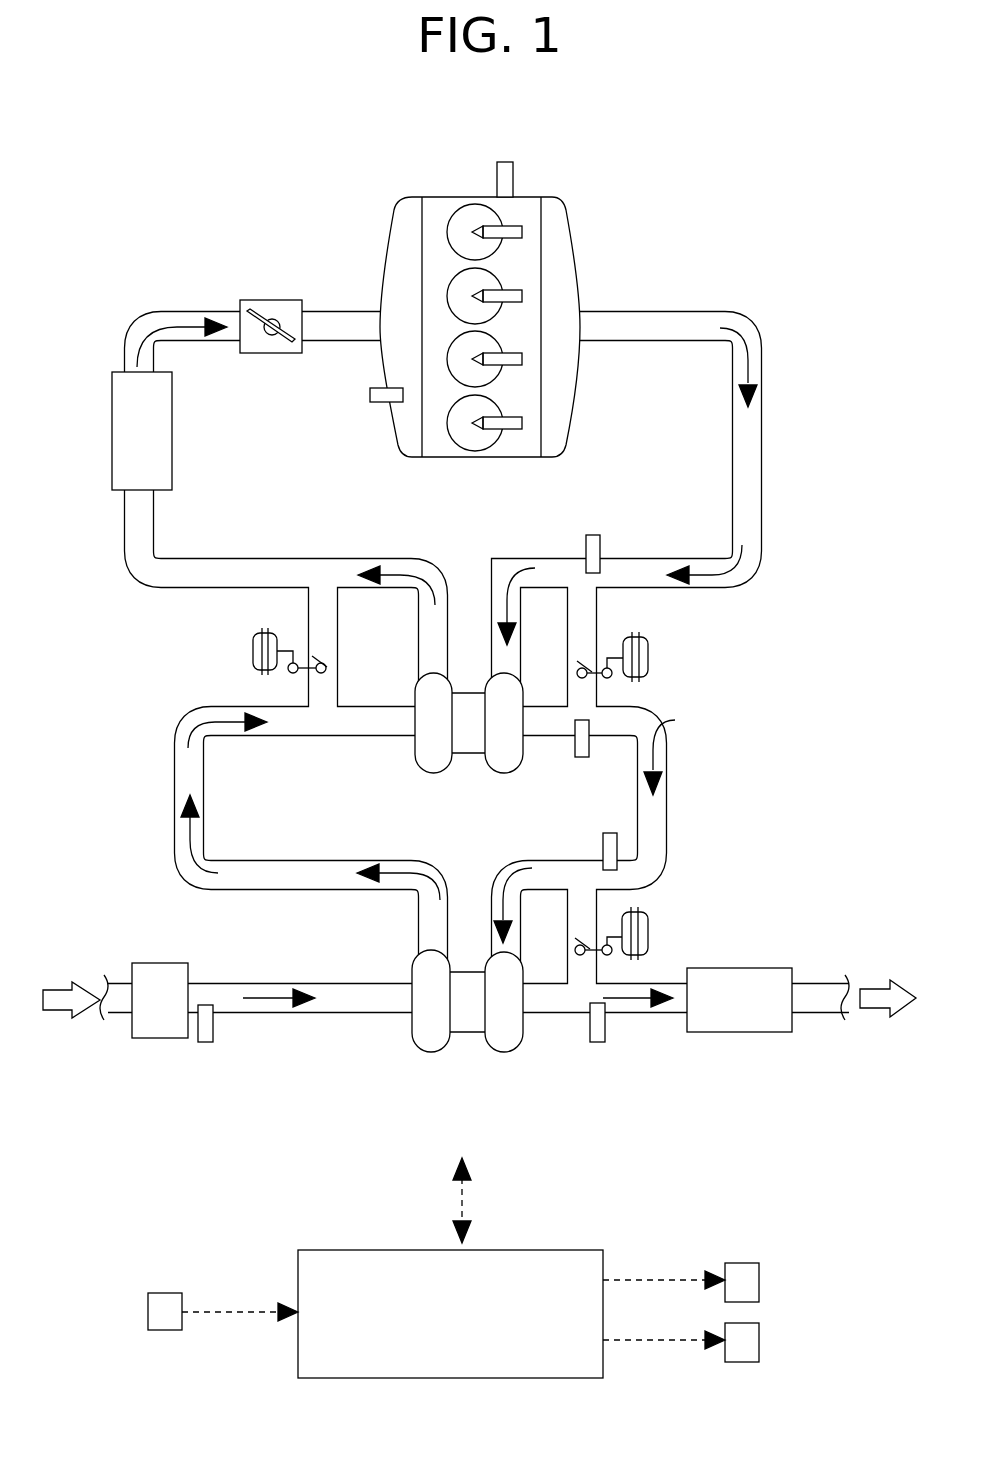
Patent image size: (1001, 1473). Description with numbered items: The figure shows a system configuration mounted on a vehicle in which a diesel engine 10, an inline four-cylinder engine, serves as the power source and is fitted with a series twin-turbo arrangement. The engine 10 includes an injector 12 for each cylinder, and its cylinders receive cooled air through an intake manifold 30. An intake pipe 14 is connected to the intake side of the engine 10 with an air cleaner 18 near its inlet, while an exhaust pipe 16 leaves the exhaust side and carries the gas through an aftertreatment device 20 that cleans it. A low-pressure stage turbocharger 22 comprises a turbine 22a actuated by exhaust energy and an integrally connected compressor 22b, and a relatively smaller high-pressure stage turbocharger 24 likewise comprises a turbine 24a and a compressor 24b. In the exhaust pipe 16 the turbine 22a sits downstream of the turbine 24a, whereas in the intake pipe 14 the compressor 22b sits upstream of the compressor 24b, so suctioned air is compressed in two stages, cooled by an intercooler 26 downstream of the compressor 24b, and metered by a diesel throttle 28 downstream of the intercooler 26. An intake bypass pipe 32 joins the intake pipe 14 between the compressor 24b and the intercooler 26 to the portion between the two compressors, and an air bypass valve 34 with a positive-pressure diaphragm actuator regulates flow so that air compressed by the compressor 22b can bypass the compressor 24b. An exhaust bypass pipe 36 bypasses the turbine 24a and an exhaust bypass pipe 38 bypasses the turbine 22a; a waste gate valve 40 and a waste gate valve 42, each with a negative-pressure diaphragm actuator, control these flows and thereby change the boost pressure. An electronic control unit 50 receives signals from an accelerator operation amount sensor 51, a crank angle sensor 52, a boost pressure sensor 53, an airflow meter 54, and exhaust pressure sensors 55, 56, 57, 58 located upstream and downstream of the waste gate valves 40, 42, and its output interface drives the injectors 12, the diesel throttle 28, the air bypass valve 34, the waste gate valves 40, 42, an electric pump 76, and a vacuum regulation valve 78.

The diesel engine 10 is at (708, 262).
The injector 12 is at (522, 238).
The intake pipe 14 is at (258, 557).
The exhaust pipe 16 is at (645, 558).
The air cleaner 18 is at (150, 963).
The aftertreatment device 20 is at (757, 968).
The low-pressure stage turbocharger 22 is at (470, 1050).
The turbine 22a is at (513, 1030).
The compressor 22b is at (434, 1040).
The high-pressure stage turbocharger 24 is at (461, 775).
The turbine 24a is at (505, 760).
The compressor 24b is at (432, 765).
The intercooler 26 is at (172, 438).
The diesel throttle 28 is at (262, 300).
The intake manifold 30 is at (405, 197).
The intake bypass pipe 32 is at (310, 612).
The air bypass valve 34 is at (318, 663).
The exhaust bypass pipe 36 is at (597, 615).
The exhaust bypass pipe 38 is at (597, 895).
The waste gate valve 40 is at (580, 668).
The waste gate valve 42 is at (578, 947).
The electronic control unit 50 is at (378, 1250).
The accelerator operation amount sensor 51 is at (148, 1306).
The crank angle sensor 52 is at (507, 162).
The boost pressure sensor 53 is at (370, 395).
The airflow meter 54 is at (208, 1042).
The exhaust pressure sensor 55 is at (593, 535).
The exhaust pressure sensor 56 is at (582, 757).
The exhaust pressure sensor 57 is at (614, 833).
The exhaust pressure sensor 58 is at (598, 1042).
The electric pump 76 is at (760, 1280).
The vacuum regulation valve 78 is at (760, 1340).